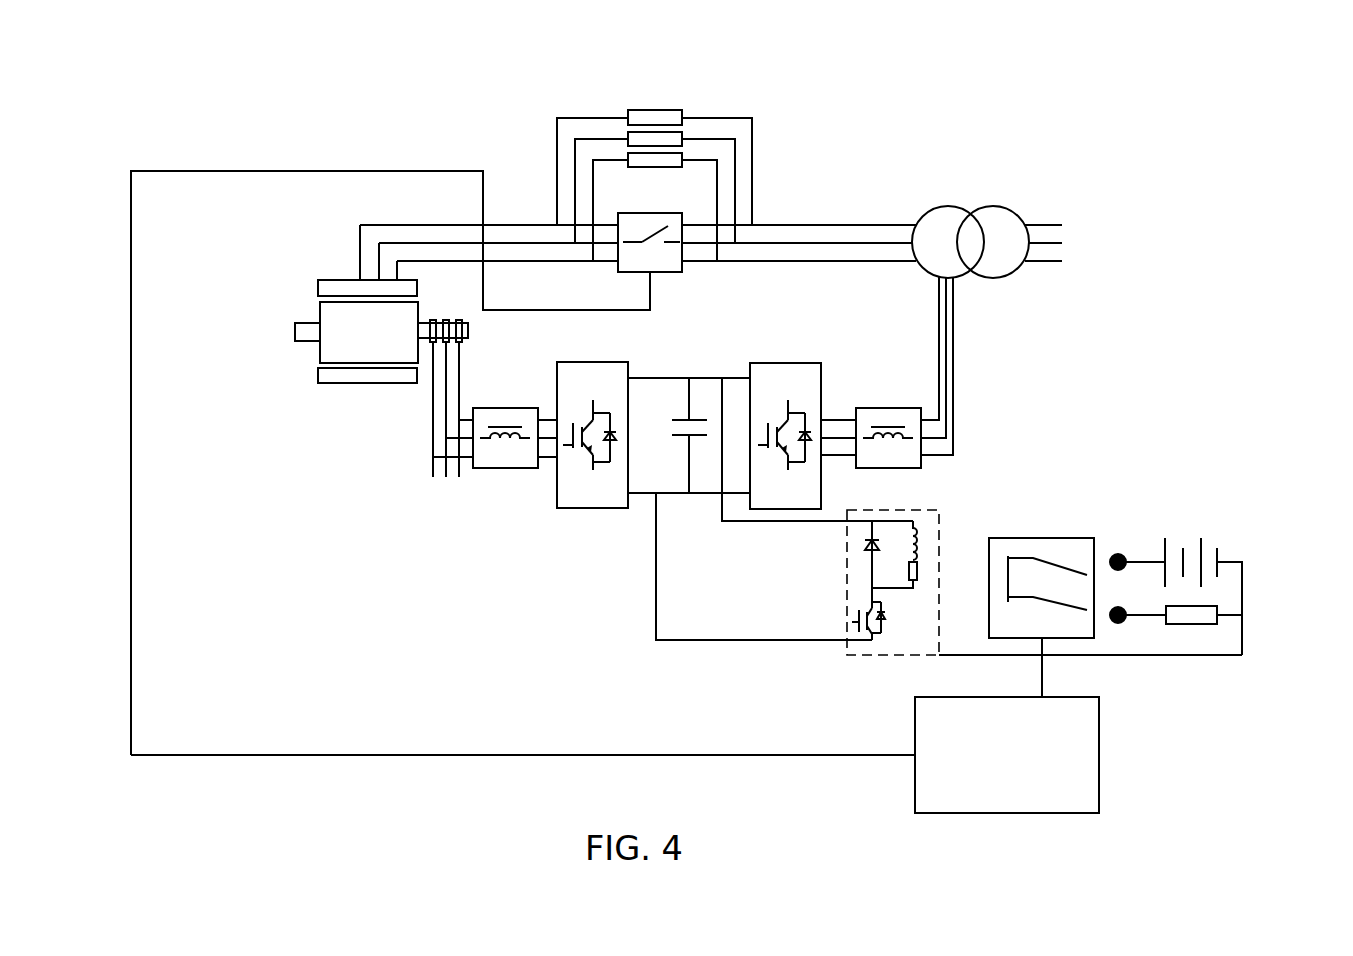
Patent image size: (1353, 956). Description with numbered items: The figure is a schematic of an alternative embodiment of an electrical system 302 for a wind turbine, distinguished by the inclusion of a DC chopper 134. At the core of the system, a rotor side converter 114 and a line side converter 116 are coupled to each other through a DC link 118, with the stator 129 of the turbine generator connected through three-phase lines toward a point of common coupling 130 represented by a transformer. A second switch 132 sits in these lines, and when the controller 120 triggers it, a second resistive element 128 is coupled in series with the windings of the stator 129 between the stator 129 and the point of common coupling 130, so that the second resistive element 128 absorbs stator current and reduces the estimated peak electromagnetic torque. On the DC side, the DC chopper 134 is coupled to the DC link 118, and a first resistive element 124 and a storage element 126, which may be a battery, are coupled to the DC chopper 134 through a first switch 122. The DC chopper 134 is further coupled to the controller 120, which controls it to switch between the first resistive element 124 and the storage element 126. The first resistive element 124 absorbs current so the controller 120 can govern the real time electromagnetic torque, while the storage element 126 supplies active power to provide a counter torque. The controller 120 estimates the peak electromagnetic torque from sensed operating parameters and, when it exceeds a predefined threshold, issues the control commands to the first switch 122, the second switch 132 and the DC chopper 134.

The electrical system 302 is at (1205, 90).
The second resistive element 128 is at (655, 110).
The stator 129 is at (327, 278).
The point of common coupling 130 is at (992, 205).
The second switch 132 is at (672, 275).
The rotor side converter 114 is at (592, 362).
The line side converter 116 is at (787, 363).
The DC link 118 is at (662, 378).
The DC chopper 134 is at (935, 510).
The first switch 122 is at (1043, 538).
The first resistive element 124 is at (1192, 626).
The storage element 126 is at (1222, 550).
The controller 120 is at (1100, 752).